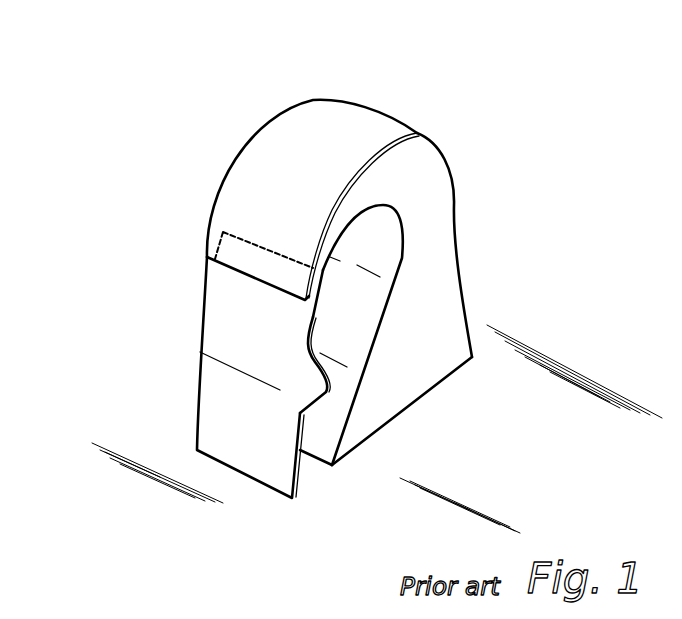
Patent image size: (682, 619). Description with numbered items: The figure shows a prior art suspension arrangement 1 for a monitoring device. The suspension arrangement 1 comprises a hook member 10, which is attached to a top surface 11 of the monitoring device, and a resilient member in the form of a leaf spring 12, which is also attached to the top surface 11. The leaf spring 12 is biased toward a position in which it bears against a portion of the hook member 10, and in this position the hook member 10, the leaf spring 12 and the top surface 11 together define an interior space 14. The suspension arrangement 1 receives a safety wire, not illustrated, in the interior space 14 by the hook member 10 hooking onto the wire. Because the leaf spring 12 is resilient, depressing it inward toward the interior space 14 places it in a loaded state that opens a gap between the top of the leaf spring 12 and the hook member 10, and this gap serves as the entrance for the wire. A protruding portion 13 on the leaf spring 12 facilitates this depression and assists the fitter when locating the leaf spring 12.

The suspension arrangement 1 is at (380, 299).
The hook member 10 is at (445, 325).
The top surface 11 is at (563, 427).
The leaf spring 12 is at (250, 442).
The protruding portion 13 is at (327, 387).
The interior space 14 is at (369, 258).